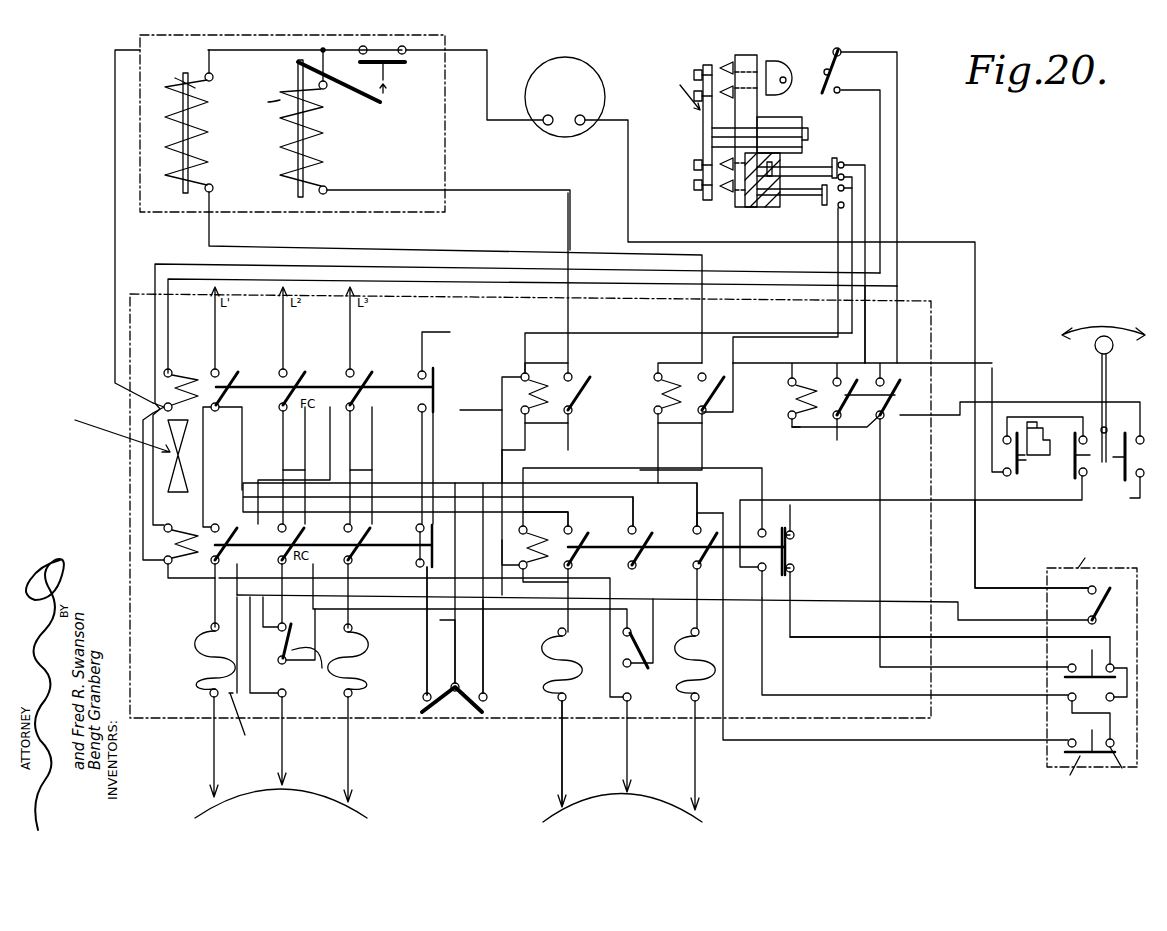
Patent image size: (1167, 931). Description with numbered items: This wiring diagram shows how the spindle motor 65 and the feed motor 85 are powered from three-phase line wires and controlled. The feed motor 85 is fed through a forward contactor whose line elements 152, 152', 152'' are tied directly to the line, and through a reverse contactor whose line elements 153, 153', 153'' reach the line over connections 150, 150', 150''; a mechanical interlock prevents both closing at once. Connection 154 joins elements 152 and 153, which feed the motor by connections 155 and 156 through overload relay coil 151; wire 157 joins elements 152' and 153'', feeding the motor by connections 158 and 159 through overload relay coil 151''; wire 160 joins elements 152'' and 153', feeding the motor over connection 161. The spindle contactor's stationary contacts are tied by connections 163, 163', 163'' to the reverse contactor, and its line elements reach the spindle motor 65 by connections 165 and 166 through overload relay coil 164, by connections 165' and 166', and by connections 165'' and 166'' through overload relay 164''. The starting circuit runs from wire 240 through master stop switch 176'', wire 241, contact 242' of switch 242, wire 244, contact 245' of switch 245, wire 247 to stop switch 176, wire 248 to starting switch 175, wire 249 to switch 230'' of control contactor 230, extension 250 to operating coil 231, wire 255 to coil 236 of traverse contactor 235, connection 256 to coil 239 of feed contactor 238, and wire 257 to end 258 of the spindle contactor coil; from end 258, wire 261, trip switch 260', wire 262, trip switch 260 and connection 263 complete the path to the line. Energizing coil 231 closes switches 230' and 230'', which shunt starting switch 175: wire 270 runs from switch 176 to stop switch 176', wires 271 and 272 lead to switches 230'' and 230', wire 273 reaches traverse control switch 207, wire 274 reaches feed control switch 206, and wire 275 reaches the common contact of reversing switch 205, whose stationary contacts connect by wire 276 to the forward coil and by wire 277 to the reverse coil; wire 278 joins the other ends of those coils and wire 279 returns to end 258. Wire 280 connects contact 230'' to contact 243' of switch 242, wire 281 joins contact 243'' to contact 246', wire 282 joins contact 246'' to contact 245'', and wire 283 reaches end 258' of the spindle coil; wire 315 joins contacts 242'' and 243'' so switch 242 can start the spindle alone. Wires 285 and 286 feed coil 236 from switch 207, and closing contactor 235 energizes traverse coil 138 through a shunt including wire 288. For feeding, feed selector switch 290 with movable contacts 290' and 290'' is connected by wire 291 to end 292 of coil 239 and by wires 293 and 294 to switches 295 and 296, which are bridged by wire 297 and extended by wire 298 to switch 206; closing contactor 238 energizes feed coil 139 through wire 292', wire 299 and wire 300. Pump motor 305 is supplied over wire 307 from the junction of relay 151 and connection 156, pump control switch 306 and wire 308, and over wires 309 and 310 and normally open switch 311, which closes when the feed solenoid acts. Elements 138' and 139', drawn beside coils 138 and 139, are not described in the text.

The traverse coil 138 is at (215, 133).
The relay armature 138' is at (170, 74).
The feed coil 139 is at (334, 128).
The relay armature 139' is at (260, 102).
The wire 300 is at (229, 82).
The wire 309 is at (352, 48).
The normally open switch 311 is at (390, 72).
The wire 310 is at (487, 110).
The pump-actuating motor 305 is at (590, 108).
The wire 299 is at (530, 192).
The wire 277 is at (485, 250).
The wire 276 is at (163, 318).
The wire 288 is at (115, 235).
The reversing switch 205 is at (780, 66).
The wire 275 is at (855, 115).
The feed control switch 206 is at (812, 165).
The rapid traverse control switch 207 is at (805, 200).
The wire 274 is at (865, 160).
The wire 298 is at (852, 215).
The wire 273 is at (865, 228).
The wire 285 is at (830, 228).
The wire 278 is at (143, 466).
The first line element 152 is at (239, 370).
The second line element 152' is at (309, 370).
The third line element 152'' is at (379, 368).
The wire 160 is at (358, 428).
The connection 154 is at (227, 448).
The connection 150 is at (224, 467).
The connection 150' is at (294, 438).
The connection 150'' is at (367, 438).
The wire 157 is at (315, 470).
The wire 297 is at (405, 458).
The first line element 153 is at (229, 523).
The second line element 153' is at (298, 525).
The third line element 153'' is at (373, 524).
The connection 158 is at (356, 570).
The connection 155 is at (185, 598).
The wire 279 is at (225, 596).
The overload relay coil 151 is at (192, 660).
The overload relay coil 151'' is at (370, 660).
The connection 156 is at (205, 740).
The wire 307 is at (945, 568).
The connection 263 is at (270, 618).
The connection 161 is at (252, 648).
The trip switch 260 is at (308, 648).
The overload relay coil 164 is at (441, 746).
The feed motor 85 is at (281, 786).
The connection 159 is at (336, 762).
The wire 293 is at (425, 650).
The feed selector switch 290 is at (460, 719).
The movable contact 290' is at (435, 686).
The movable contact 290'' is at (516, 654).
The switch 296 is at (455, 556).
The wire 291 is at (488, 637).
The wire 294 is at (485, 662).
The switch 295 is at (455, 385).
The operating coil 239 is at (535, 362).
The feed contactor 238 is at (588, 405).
The end of feed contactor coil 292 is at (520, 436).
The wire 292' is at (571, 436).
The wire 257 is at (505, 462).
The connection 256 is at (598, 363).
The operating coil 236 is at (655, 388).
The traverse contactor 235 is at (735, 396).
The wire 286 is at (665, 428).
The operating coil 231 is at (805, 380).
The wire 255 is at (775, 378).
The control contactor 230 is at (800, 442).
The switch 230' is at (857, 410).
The switch 230'' is at (992, 407).
The extension 250 is at (838, 442).
The wire 272 is at (868, 355).
The wire 271 is at (908, 362).
The wire 283 is at (697, 468).
The connection 163 is at (566, 513).
The connection 163' is at (608, 480).
The connection 163'' is at (668, 481).
The stationary contact 245'' is at (911, 517).
The end of spindle contactor coil 258' is at (521, 549).
The end of spindle contactor coil 258 is at (545, 571).
The connection 165 is at (589, 548).
The connection 165'' is at (681, 545).
The switch 245 is at (810, 551).
The wire 282 is at (795, 520).
The stationary contact 246'' is at (829, 533).
The stationary contact 246' is at (823, 575).
The stationary contact 245' is at (744, 583).
The wire 247 is at (905, 502).
The wire 280 is at (880, 585).
The wire 262 is at (560, 613).
The connection 165' is at (577, 664).
The wire 261 is at (650, 630).
The trip switch 260' is at (651, 664).
The overload relay coil 164'' is at (720, 635).
The connection 166 is at (588, 753).
The connection 166' is at (654, 746).
The connection 166'' is at (725, 755).
The spindle motor 65 is at (622, 796).
The wire 244 is at (800, 690).
The wire 240 is at (812, 742).
The wire 281 is at (975, 640).
The wire 308 is at (978, 568).
The wire 270 is at (1037, 422).
The stop switch 176' is at (1019, 478).
The stop switch 176 is at (1064, 476).
The starting switch 175 is at (1120, 480).
The wire 248 is at (1138, 485).
The wire 249 is at (1065, 400).
The pump control switch 306 is at (1088, 603).
The normally closed contact 243'' is at (1117, 637).
The switch 242 is at (1061, 657).
The normally closed contact 243' is at (1037, 673).
The wire 315 is at (1118, 690).
The normally open contact 242' is at (1058, 716).
The wire 241 is at (1085, 718).
The normally open contact 242'' is at (1119, 767).
The master stop switch 176'' is at (1058, 778).